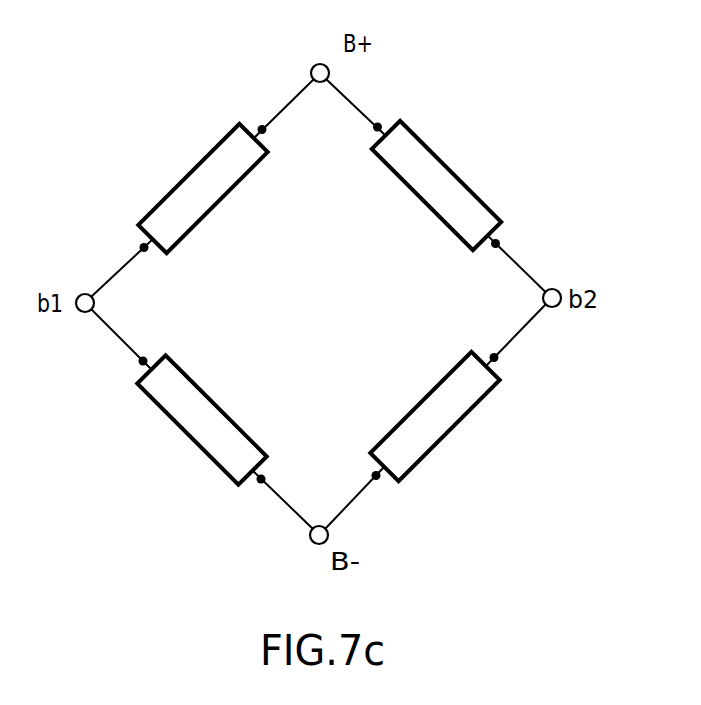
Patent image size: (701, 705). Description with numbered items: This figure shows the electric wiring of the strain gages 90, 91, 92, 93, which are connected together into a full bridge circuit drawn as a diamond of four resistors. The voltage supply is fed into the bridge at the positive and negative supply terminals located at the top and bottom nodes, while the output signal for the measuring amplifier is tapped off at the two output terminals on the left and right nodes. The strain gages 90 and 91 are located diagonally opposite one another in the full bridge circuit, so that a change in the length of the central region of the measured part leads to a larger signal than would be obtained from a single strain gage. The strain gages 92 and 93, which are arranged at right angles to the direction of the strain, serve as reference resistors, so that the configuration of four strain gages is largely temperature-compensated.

The strain gage 90 is at (188, 205).
The strain gage 91 is at (448, 420).
The strain gage 92 is at (207, 438).
The strain gage 93 is at (448, 179).